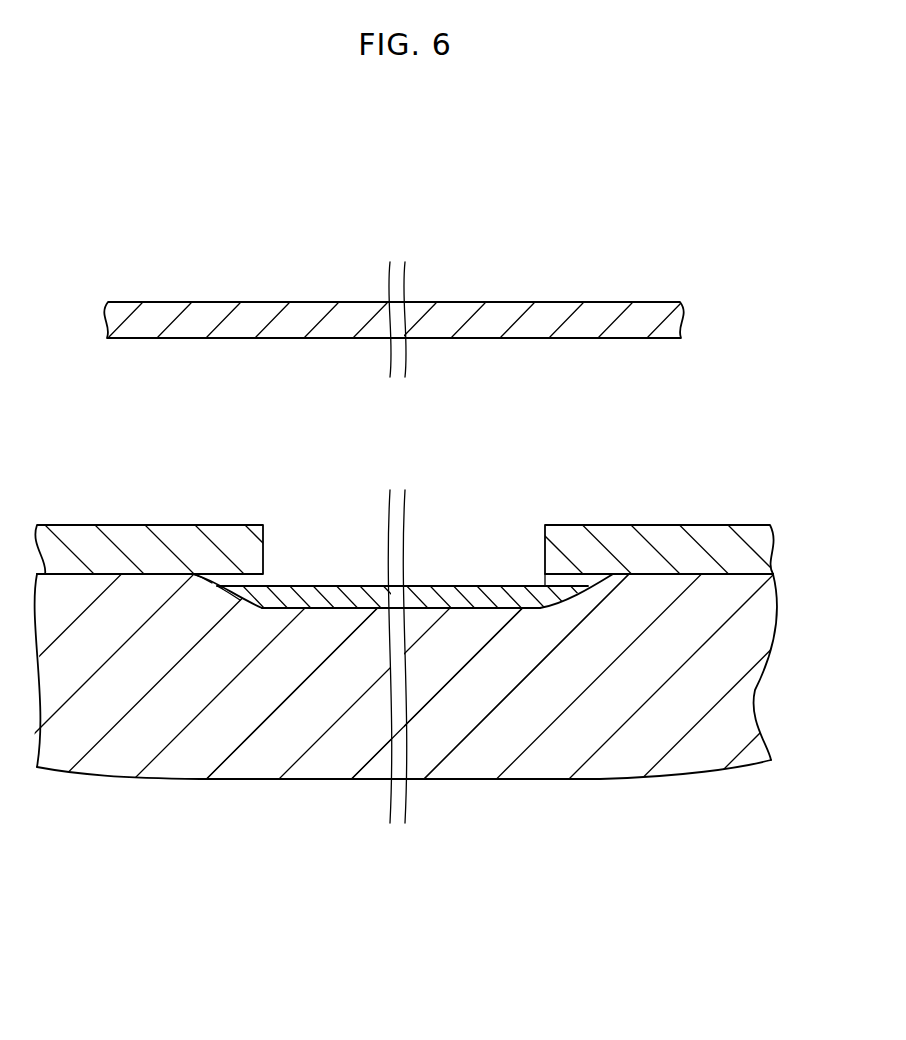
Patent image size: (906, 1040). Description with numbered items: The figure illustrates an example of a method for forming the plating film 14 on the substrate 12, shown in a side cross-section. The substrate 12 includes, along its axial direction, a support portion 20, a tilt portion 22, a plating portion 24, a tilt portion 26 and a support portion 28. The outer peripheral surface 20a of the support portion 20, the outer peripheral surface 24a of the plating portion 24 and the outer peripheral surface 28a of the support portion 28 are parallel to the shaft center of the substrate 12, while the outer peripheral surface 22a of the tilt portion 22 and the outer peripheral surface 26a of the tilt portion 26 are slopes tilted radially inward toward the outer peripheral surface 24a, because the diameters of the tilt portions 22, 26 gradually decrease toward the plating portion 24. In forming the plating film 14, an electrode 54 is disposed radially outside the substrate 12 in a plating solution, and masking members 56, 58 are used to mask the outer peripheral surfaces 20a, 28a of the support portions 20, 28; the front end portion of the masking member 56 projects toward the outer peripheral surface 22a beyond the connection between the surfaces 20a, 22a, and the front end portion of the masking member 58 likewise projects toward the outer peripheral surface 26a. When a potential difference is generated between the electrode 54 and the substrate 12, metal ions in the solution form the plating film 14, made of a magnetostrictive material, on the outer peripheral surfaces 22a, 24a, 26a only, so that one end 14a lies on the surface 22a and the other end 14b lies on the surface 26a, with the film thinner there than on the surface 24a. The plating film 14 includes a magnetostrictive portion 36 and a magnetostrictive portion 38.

The substrate 12 is at (178, 760).
The plating film 14 is at (360, 590).
The one end of the plating film 14a is at (550, 588).
The other end of the plating film 14b is at (232, 588).
The support portion 20 is at (702, 742).
The outer peripheral surface of the support portion 20a is at (735, 572).
The tilt portion 22 is at (602, 623).
The outer peripheral surface of the tilt portion 22a is at (590, 583).
The plating portion 24 is at (305, 742).
The outer peripheral surface of the plating portion 24a is at (327, 604).
The tilt portion 26 is at (208, 608).
The outer peripheral surface of the tilt portion 26a is at (205, 582).
The support portion 28 is at (88, 742).
The outer peripheral surface of the support portion 28a is at (70, 568).
The magnetostrictive portion 36 is at (438, 594).
The magnetostrictive portion 38 is at (339, 592).
The electrode 54 is at (505, 313).
The masking member 56 is at (652, 528).
The masking member 58 is at (120, 530).